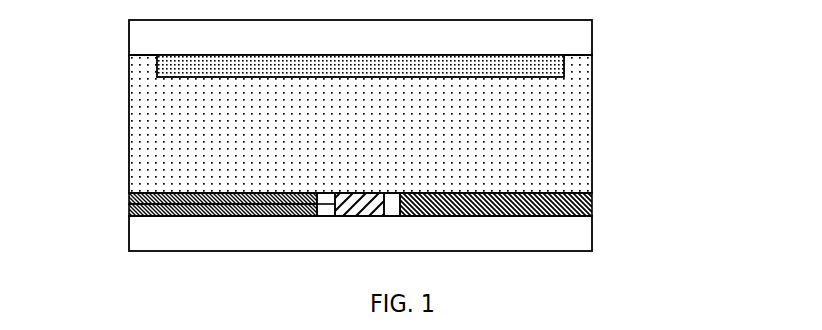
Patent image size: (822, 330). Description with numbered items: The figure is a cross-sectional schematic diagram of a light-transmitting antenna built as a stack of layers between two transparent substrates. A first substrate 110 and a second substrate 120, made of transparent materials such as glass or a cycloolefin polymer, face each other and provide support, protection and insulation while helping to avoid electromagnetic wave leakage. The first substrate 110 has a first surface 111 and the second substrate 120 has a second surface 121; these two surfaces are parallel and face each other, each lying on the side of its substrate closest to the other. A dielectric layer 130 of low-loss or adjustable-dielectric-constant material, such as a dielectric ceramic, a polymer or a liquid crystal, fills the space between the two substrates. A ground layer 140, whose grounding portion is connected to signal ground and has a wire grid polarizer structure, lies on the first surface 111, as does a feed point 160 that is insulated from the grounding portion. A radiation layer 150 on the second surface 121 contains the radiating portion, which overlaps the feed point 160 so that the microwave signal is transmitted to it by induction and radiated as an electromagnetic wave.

The first substrate 110 is at (556, 232).
The first surface 111 is at (129, 216).
The second substrate 120 is at (555, 38).
The second surface 121 is at (129, 54).
The dielectric layer 130 is at (556, 152).
The ground layer 140 is at (557, 204).
The radiation layer 150 is at (543, 64).
The feed point 160 is at (129, 203).